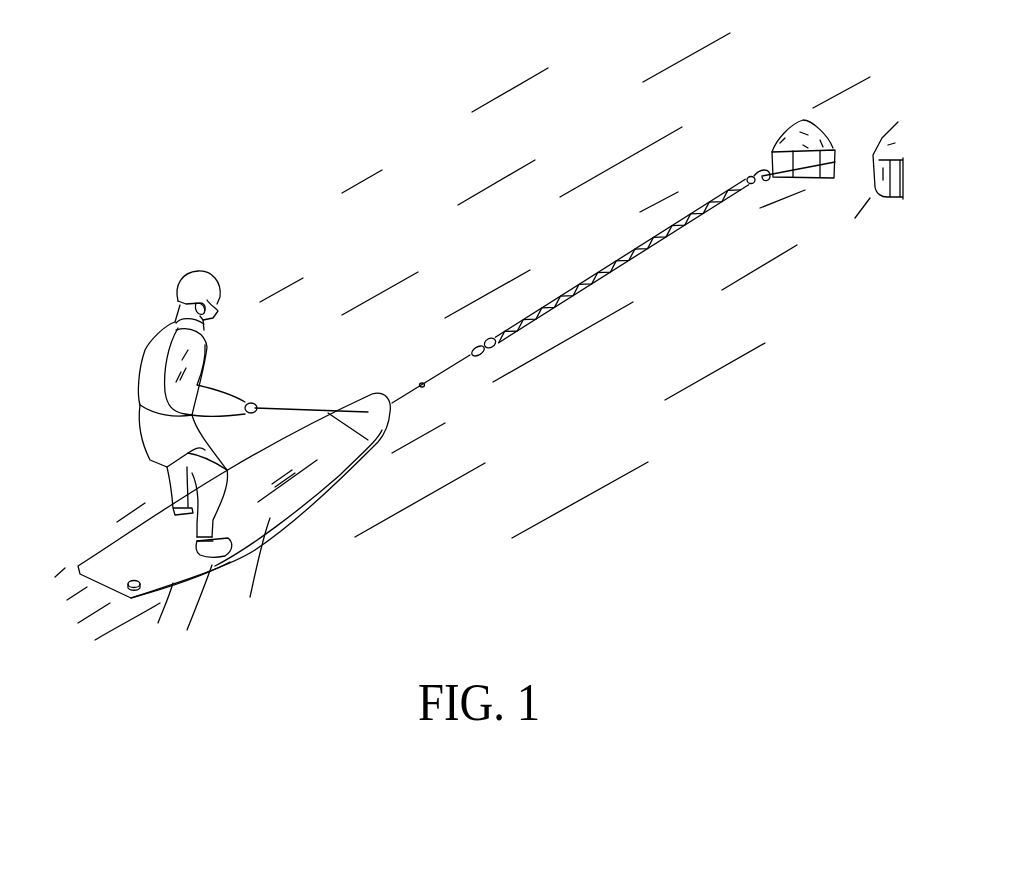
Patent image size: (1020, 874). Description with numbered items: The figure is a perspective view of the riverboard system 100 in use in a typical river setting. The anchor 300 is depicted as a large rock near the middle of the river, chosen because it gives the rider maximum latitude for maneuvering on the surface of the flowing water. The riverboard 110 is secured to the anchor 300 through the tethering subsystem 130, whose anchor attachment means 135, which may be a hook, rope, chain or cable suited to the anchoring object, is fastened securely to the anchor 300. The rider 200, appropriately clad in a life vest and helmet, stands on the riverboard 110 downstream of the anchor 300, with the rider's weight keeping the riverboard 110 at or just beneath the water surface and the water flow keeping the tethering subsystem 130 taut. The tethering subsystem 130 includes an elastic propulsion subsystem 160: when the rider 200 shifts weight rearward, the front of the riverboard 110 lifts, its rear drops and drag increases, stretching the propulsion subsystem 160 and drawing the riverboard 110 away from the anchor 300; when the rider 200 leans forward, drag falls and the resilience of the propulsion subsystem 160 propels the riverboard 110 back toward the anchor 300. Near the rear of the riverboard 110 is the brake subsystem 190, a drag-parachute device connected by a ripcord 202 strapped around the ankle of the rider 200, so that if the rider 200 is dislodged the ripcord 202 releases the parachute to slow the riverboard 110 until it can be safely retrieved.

The riverboard system 100 is at (234, 245).
The riverboard 110 is at (375, 400).
The tethering subsystem 130 is at (570, 273).
The anchor attachment means 135 is at (750, 176).
The elastic propulsion subsystem 160 is at (615, 263).
The brake subsystem 190 is at (128, 581).
The rider 200 is at (158, 332).
The ripcord 202 is at (174, 590).
The anchor 300 is at (776, 138).